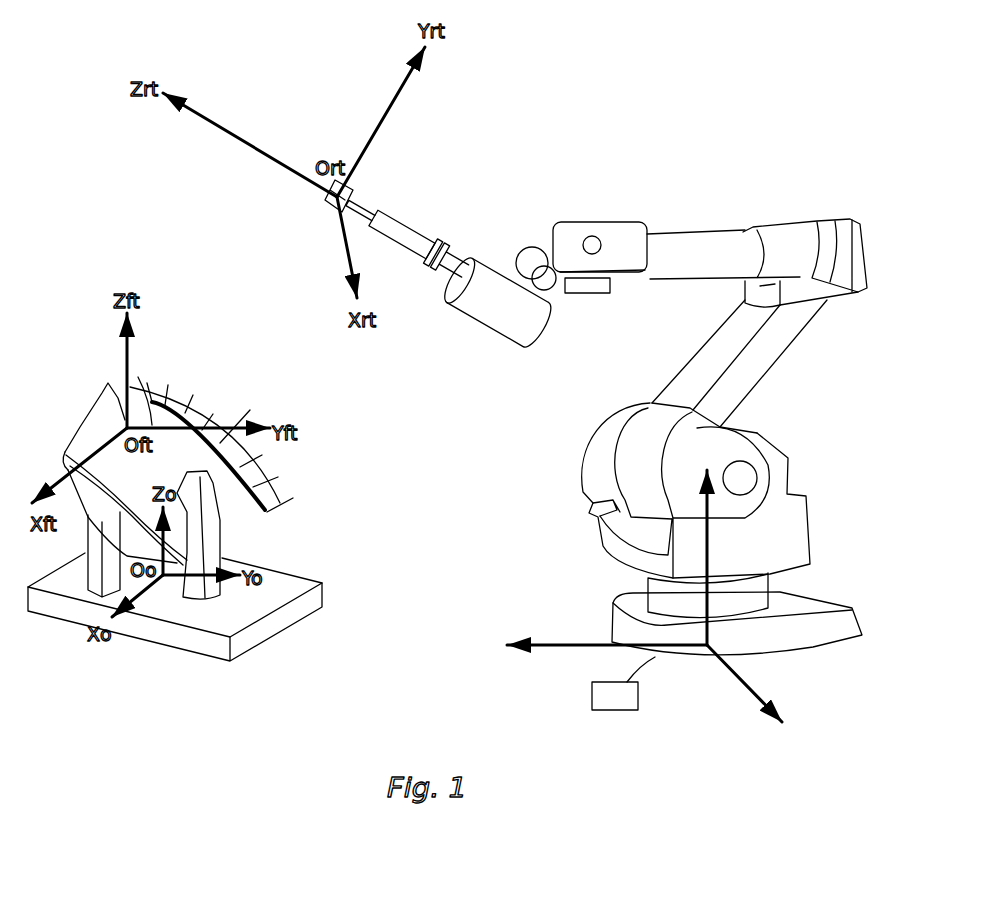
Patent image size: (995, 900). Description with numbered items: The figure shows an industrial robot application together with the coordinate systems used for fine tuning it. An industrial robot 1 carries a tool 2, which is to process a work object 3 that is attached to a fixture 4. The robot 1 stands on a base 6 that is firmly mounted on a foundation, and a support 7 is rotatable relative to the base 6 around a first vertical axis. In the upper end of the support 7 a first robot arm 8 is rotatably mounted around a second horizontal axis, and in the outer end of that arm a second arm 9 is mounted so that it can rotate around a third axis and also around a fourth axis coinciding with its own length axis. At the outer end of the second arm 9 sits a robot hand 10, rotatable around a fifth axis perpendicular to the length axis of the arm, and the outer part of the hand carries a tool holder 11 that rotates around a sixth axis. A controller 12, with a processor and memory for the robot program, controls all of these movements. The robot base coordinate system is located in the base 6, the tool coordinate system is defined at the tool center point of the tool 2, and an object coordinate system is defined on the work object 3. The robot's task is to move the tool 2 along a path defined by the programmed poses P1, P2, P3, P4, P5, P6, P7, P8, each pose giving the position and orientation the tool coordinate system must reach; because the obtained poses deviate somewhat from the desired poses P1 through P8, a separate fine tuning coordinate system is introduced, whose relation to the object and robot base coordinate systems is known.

The industrial robot 1 is at (835, 392).
The tool 2 is at (350, 192).
The work object 3 is at (238, 517).
The fixture 4 is at (290, 587).
The base 6 is at (815, 633).
The support 7 is at (785, 528).
The first robot arm 8 is at (778, 345).
The second arm 9 is at (693, 236).
The robot hand 10 is at (578, 227).
The tool holder 11 is at (527, 280).
The controller 12 is at (592, 690).
The pose P1 is at (144, 381).
The pose P2 is at (171, 386).
The pose P3 is at (197, 396).
The pose P4 is at (216, 414).
The pose P5 is at (245, 418).
The pose P6 is at (261, 455).
The pose P7 is at (275, 478).
The pose P8 is at (290, 500).